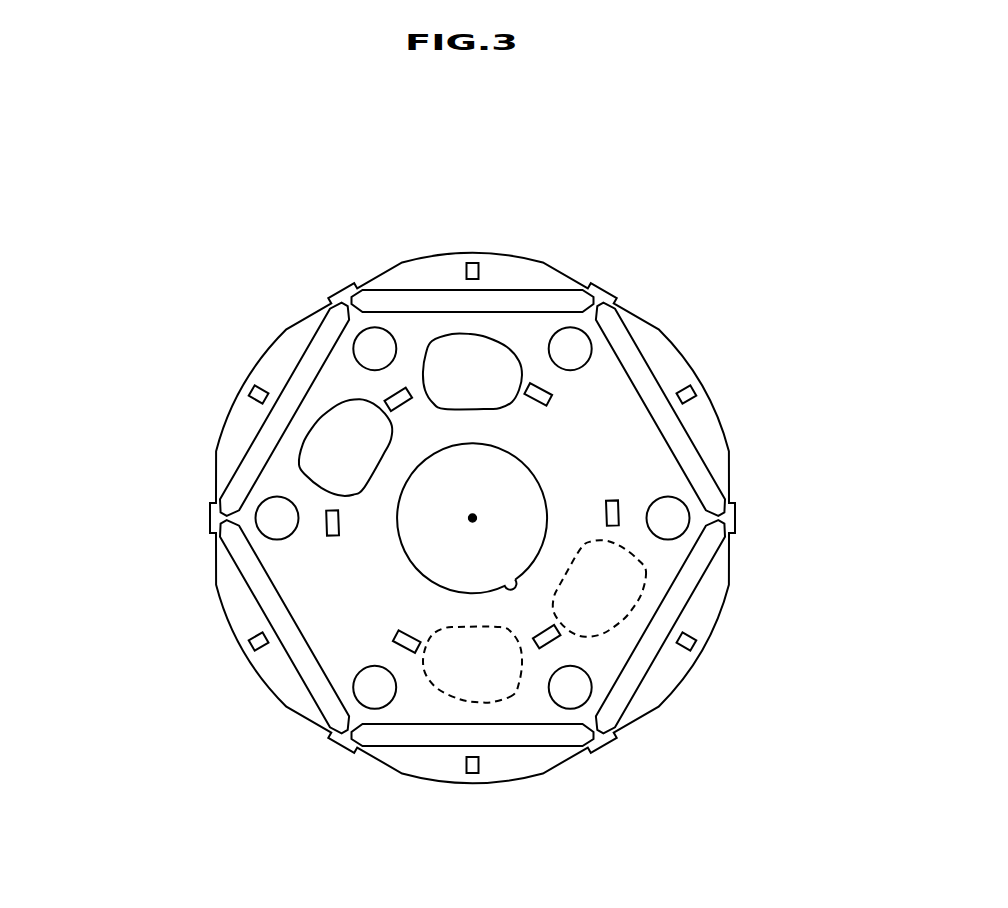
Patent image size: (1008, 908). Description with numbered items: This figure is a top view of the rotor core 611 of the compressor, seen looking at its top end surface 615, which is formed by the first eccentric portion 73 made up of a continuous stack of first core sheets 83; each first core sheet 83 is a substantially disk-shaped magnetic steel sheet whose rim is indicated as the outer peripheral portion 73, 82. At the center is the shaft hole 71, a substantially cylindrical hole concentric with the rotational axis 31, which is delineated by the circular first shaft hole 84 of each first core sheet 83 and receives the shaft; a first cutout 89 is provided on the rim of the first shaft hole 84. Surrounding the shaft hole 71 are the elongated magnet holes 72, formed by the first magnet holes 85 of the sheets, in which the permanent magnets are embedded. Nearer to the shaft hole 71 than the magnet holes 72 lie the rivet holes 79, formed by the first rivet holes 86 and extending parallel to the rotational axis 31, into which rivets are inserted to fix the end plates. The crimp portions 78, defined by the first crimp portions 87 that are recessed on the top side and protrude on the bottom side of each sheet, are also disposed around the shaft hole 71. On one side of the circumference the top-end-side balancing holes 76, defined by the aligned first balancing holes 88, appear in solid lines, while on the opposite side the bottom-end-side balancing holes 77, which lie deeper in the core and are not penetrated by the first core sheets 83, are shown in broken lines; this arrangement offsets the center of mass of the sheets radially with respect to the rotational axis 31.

The rotor core 611 is at (702, 168).
The top end surface 615 is at (292, 697).
The first core sheet 83 is at (230, 632).
The first eccentric portion 73 is at (524, 518).
The outer peripheral edge 82 is at (724, 406).
The magnet hole 72 is at (472, 519).
The first magnet hole 85 is at (535, 300).
The rivet hole 79 is at (473, 517).
The first rivet hole 86 is at (570, 348).
The crimp portion 78 is at (474, 519).
The first crimp portion 87 is at (469, 262).
The top-end-side balancing hole 76 is at (359, 345).
The first balancing hole 88 is at (472, 350).
The bottom-end-side balancing hole 77 is at (470, 687).
The shaft hole 71 is at (382, 614).
The first shaft hole 84 is at (412, 570).
The first cutout 89 is at (516, 590).
The rotational axis 31 is at (476, 514).